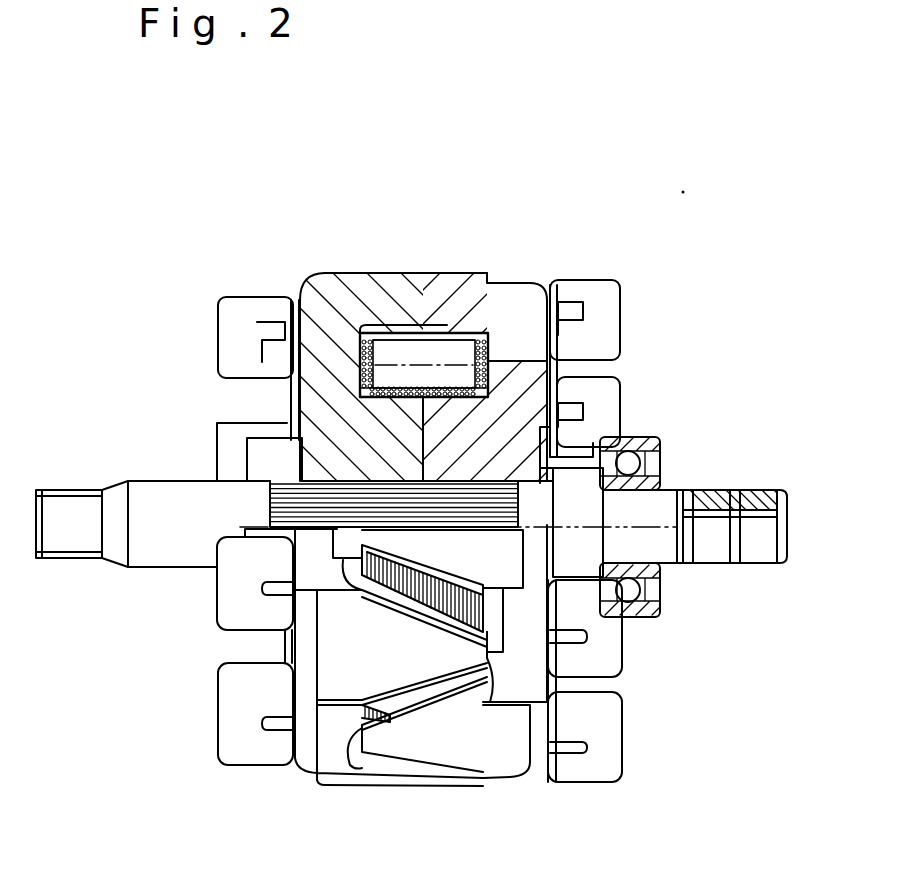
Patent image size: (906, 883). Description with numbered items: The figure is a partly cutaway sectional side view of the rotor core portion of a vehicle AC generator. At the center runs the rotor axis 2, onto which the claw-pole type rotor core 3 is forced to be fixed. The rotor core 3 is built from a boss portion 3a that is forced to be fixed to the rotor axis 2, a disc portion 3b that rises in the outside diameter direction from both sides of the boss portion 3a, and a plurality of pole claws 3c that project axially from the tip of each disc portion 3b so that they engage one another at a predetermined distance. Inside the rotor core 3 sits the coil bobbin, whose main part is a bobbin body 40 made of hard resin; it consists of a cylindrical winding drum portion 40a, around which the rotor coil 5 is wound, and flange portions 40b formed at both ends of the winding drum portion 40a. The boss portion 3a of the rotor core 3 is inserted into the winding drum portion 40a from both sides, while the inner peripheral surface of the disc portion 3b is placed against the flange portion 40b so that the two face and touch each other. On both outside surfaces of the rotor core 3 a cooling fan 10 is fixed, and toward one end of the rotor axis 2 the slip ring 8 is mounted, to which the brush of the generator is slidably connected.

The rotor axis 2 is at (155, 500).
The rotor core 3 is at (491, 464).
The boss portion 3a is at (387, 467).
The disc portion 3b is at (308, 383).
The pole claws 3c is at (420, 273).
The rotor coil 5 is at (423, 355).
The slip ring 8 is at (710, 490).
The cooling fan 10 is at (230, 338).
The bobbin body 40 is at (492, 380).
The winding drum portion 40a is at (393, 400).
The flange portions 40b is at (360, 332).